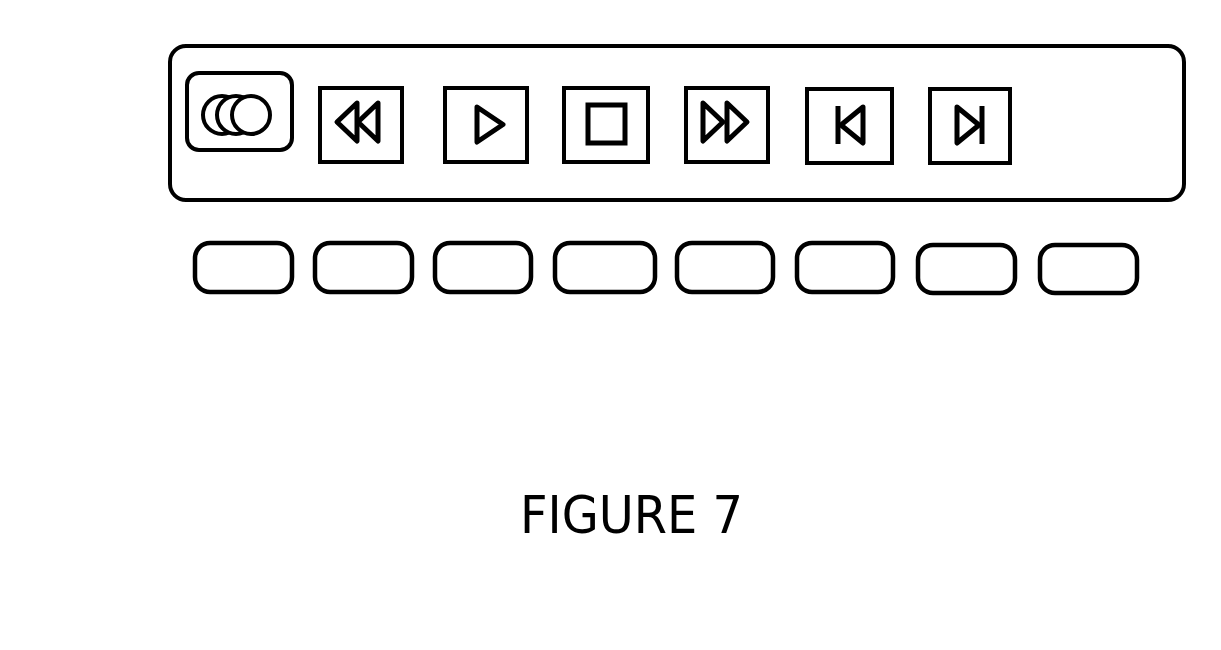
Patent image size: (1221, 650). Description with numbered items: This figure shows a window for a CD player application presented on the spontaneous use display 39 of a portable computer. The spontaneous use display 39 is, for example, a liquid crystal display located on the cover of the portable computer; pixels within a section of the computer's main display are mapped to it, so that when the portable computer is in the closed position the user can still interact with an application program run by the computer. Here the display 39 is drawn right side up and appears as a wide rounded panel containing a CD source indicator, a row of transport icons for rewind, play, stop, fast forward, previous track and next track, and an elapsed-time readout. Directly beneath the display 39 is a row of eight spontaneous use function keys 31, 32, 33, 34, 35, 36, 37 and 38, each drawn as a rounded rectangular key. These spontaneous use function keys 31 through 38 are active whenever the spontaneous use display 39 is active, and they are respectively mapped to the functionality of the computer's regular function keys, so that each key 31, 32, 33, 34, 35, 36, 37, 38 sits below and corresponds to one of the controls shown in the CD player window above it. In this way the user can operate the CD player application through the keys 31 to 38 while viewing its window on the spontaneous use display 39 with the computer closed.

The spontaneous use function key 31 is at (250, 292).
The spontaneous use function key 32 is at (381, 292).
The spontaneous use function key 33 is at (500, 292).
The spontaneous use function key 34 is at (622, 292).
The spontaneous use function key 35 is at (742, 292).
The spontaneous use function key 36 is at (865, 292).
The spontaneous use function key 37 is at (987, 293).
The spontaneous use function key 38 is at (1107, 293).
The spontaneous use display 39 is at (1163, 203).